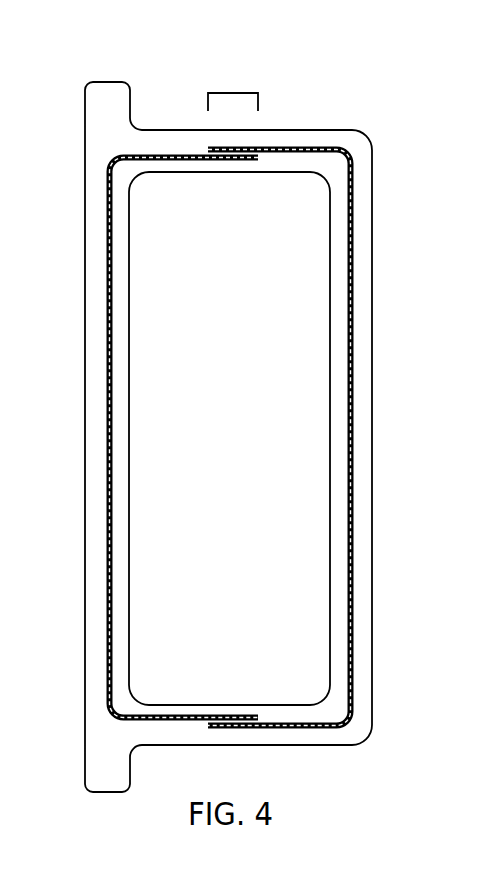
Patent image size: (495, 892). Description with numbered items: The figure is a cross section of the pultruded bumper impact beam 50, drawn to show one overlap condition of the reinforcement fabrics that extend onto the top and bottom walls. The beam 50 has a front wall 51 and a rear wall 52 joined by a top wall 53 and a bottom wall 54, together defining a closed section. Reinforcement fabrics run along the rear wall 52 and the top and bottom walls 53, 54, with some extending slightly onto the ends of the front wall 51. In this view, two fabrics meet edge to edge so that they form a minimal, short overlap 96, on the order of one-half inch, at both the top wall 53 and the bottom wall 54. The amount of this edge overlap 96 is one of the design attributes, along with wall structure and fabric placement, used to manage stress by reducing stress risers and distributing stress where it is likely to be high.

The pultruded bumper impact beam 50 is at (230, 420).
The front wall 51 is at (92, 222).
The rear wall 52 is at (367, 230).
The top wall 53 is at (317, 745).
The bottom wall 54 is at (295, 132).
The minimal/short overlap 96 is at (220, 93).